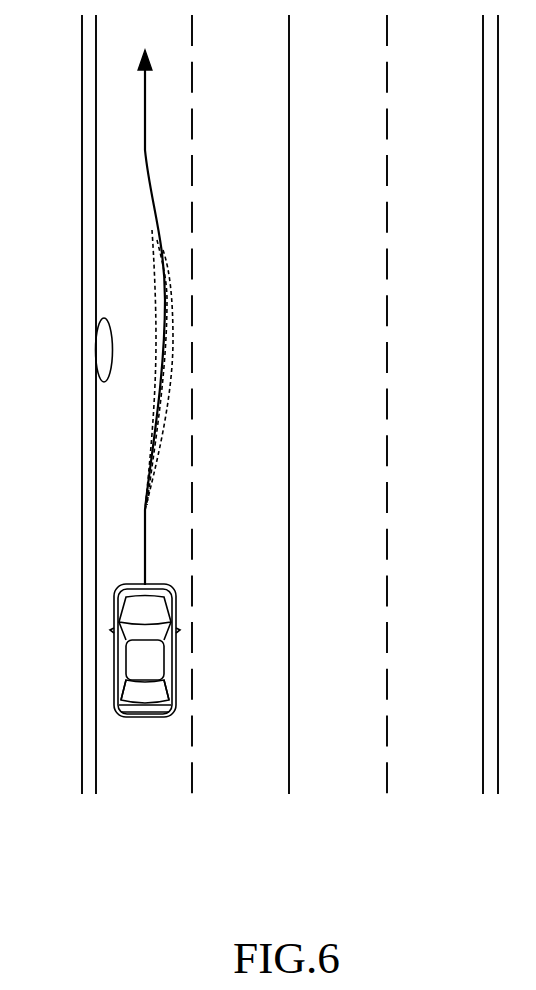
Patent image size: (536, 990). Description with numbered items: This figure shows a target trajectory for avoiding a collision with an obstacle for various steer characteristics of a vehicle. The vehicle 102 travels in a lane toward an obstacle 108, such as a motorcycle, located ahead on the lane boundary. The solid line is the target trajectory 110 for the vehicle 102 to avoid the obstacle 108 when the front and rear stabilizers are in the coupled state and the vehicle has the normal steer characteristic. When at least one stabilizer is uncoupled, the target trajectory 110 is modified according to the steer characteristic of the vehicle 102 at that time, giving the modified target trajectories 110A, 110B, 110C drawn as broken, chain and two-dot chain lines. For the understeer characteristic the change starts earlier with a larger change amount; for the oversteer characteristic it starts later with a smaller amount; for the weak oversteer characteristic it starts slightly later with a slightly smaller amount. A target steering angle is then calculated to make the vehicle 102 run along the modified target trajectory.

The vehicle 102 is at (176, 650).
The obstacle 108 is at (99, 348).
The target trajectory 110 is at (165, 278).
The modified target trajectory 110A is at (172, 320).
The modified target trajectory 110B is at (157, 356).
The modified target trajectory 110C is at (167, 395).